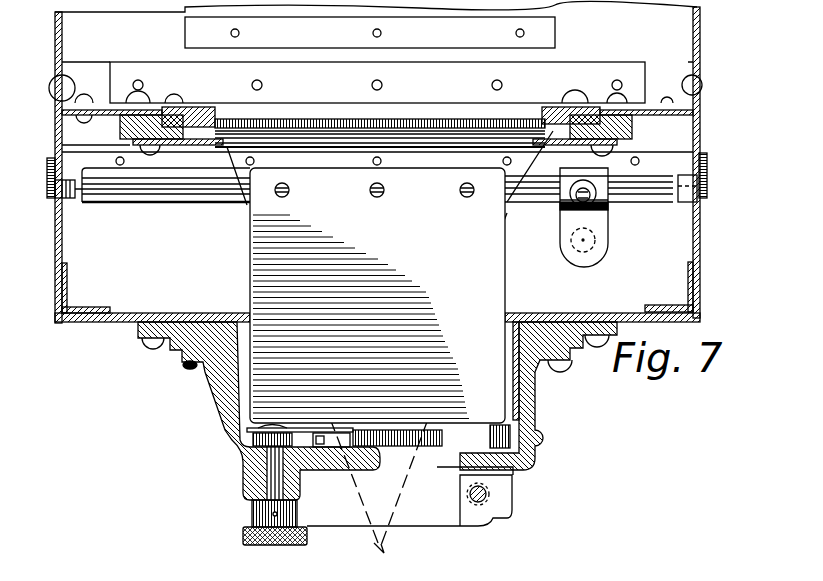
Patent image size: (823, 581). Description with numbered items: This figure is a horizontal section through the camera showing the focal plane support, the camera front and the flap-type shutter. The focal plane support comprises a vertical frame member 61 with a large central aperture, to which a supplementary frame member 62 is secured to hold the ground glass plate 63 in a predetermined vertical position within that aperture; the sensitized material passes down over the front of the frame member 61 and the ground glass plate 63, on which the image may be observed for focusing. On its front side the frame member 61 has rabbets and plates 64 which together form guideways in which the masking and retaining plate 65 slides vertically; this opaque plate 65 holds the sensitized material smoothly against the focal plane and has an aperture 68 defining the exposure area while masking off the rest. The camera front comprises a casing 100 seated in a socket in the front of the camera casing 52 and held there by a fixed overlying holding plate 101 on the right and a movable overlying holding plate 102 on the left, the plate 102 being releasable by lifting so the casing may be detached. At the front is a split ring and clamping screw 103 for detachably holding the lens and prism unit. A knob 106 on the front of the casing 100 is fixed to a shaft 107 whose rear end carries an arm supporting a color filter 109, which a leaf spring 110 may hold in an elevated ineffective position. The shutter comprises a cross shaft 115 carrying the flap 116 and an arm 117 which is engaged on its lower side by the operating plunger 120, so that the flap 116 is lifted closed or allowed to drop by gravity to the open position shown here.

The camera casing 52 is at (707, 38).
The vertical frame member 61 is at (632, 122).
The supplementary frame member 62 is at (556, 110).
The ground glass plate 63 is at (505, 122).
The plates 64 is at (170, 142).
The masking and retaining plate 65 is at (565, 135).
The aperture 68 is at (228, 140).
The casing 100 is at (535, 410).
The fixed overlying holding plate 101 is at (536, 392).
The movable overlying holding plate 102 is at (205, 360).
The split ring and clamping screw 103 is at (490, 492).
The knob 106 is at (276, 535).
The shaft 107 is at (272, 476).
The color filter 109 is at (395, 448).
The leaf spring 110 is at (490, 434).
The cross shaft 115 is at (180, 192).
The flap 116 is at (505, 284).
The arm 117 is at (608, 222).
The operating plunger 120 is at (600, 241).